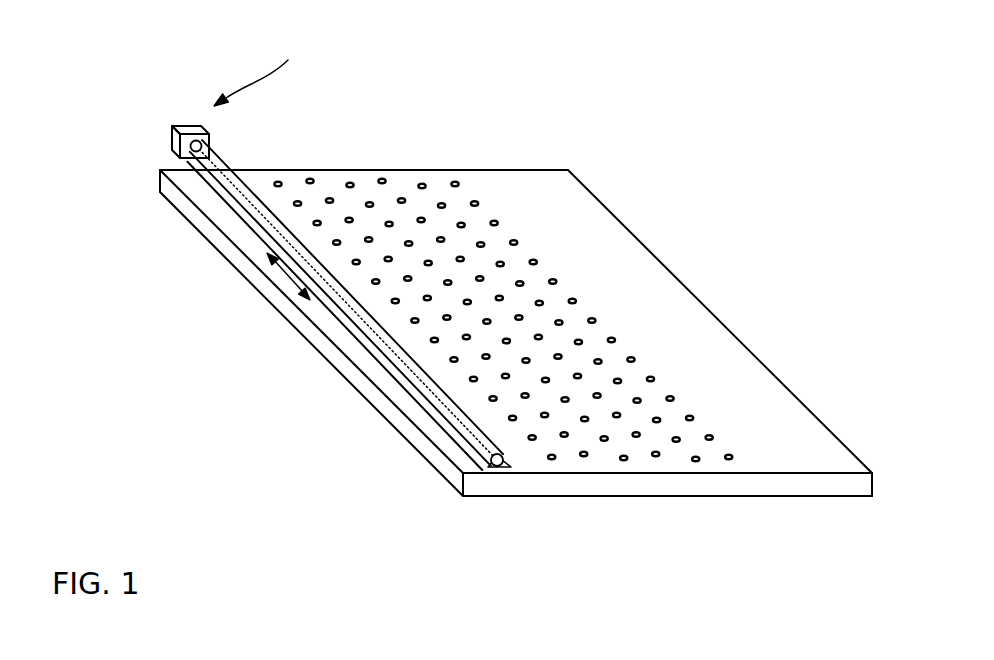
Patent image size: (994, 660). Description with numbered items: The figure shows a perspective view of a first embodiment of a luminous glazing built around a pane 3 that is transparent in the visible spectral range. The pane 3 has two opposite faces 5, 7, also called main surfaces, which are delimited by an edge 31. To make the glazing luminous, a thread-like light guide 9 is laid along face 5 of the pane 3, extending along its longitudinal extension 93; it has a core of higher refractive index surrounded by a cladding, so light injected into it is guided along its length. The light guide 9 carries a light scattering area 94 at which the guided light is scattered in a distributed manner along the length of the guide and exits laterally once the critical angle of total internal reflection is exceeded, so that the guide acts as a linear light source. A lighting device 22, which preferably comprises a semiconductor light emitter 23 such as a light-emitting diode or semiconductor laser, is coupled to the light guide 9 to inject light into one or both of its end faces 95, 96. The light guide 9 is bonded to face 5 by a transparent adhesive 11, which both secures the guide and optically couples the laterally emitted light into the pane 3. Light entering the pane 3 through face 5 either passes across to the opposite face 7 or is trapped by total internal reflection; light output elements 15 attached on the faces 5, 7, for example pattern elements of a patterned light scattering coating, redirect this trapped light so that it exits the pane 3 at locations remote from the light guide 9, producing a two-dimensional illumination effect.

The pane 3 is at (618, 217).
The face 5 is at (494, 182).
The face 7 is at (648, 498).
The light guide 9 is at (326, 328).
The transparent adhesive 11 is at (432, 415).
The light output elements 15 is at (426, 182).
The lighting device 22 is at (262, 64).
The semiconductor light emitter 23 is at (176, 126).
The edge 31 is at (764, 489).
The longitudinal extension 93 is at (290, 283).
The light scattering area 94 is at (383, 352).
The end face 95 is at (190, 146).
The end face 96 is at (501, 467).